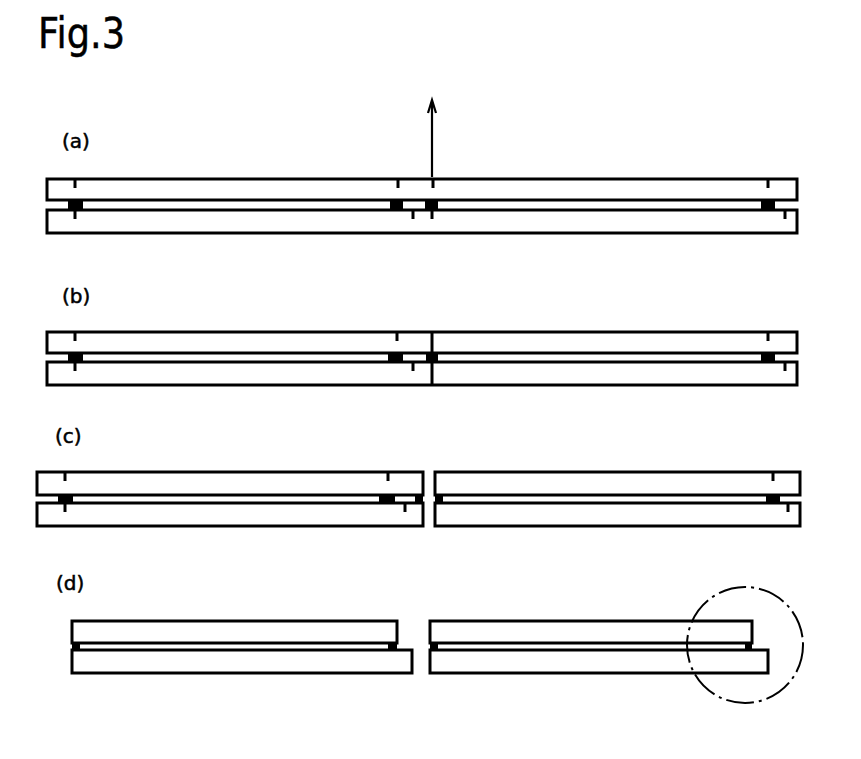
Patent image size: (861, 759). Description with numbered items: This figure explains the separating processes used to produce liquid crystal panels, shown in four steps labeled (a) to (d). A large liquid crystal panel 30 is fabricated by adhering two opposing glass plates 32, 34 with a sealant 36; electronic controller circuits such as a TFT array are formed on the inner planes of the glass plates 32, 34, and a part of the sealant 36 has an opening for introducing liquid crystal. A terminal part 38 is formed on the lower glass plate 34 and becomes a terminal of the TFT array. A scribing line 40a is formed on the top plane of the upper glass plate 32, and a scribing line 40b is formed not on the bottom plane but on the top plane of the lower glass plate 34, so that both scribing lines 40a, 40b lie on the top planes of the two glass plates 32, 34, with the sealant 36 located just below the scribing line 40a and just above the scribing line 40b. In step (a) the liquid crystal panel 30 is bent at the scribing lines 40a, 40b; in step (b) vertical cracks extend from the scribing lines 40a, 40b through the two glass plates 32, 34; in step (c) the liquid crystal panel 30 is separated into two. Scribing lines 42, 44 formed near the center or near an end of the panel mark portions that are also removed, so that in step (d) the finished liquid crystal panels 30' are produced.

The liquid crystal panel 30 is at (422, 180).
The glass plate 32 is at (574, 179).
The glass plate 34 is at (568, 233).
The sealant 36 is at (392, 206).
The terminal part 38 is at (771, 635).
The scribing line 40a is at (440, 186).
The scribing line 40b is at (438, 213).
The scribing line 42 is at (397, 178).
The scribing line 44 is at (415, 214).
The liquid crystal panel 30' is at (420, 673).